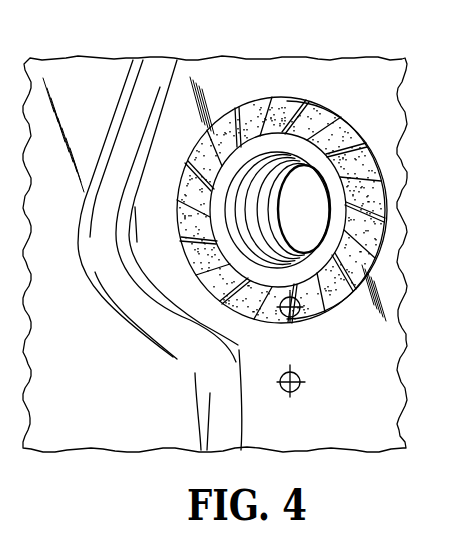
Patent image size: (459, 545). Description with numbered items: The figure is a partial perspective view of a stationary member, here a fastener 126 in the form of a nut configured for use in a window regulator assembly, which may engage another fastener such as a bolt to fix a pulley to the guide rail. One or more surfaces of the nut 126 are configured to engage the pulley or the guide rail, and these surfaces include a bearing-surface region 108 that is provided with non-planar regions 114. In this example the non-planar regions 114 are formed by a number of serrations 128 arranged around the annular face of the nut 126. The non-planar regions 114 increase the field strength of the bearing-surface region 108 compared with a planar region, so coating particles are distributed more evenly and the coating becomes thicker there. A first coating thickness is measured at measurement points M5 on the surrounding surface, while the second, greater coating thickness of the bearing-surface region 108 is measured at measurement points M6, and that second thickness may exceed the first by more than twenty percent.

The bearing-surface region 108 is at (281, 154).
The non-planar regions 114 is at (314, 120).
The fastener 126 is at (199, 277).
The serrations 128 is at (265, 117).
The measurement points M6 is at (297, 318).
The measurement points M5 is at (298, 393).